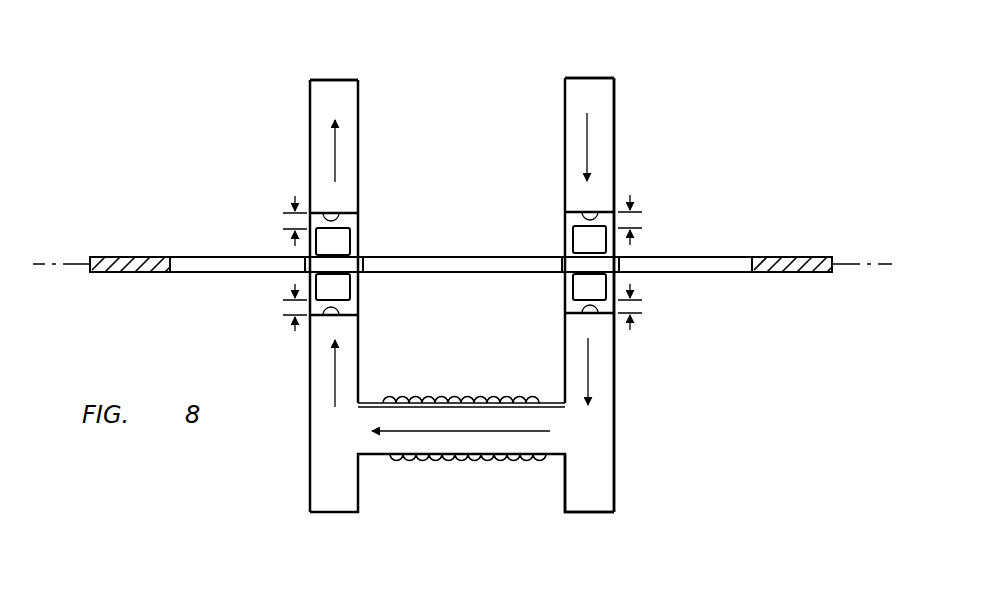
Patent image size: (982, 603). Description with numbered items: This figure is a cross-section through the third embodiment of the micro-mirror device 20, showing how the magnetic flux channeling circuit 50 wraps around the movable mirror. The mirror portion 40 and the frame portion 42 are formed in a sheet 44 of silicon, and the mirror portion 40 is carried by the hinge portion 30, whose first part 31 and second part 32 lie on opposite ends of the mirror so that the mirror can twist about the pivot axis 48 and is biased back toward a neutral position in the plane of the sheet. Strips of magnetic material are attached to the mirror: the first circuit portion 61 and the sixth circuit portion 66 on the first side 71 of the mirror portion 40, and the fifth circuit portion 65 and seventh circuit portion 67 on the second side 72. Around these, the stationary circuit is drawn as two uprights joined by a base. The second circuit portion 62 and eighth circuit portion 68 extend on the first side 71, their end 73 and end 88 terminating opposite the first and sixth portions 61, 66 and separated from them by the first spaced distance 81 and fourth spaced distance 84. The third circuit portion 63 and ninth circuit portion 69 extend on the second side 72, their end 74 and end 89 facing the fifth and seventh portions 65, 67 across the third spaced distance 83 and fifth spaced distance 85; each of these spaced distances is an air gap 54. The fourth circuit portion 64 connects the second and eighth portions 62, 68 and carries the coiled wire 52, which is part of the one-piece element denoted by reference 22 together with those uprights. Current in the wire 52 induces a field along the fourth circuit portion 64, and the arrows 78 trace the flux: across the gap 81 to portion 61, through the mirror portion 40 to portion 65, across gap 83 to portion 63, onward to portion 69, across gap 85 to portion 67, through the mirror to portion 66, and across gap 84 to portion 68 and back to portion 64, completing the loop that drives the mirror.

The device 20 is at (731, 90).
The stator 22 is at (600, 66).
The hinge portion 30 is at (189, 276).
The first part 31 is at (705, 258).
The second part 32 is at (220, 258).
The mirror portion 40 is at (433, 257).
The frame portion 42 is at (127, 258).
The sheet 44 is at (838, 277).
The pivot axis 48 is at (63, 262).
The magnetic flux channeling circuit 50 is at (617, 145).
The wire 52 is at (407, 465).
The air gap 54 is at (360, 215).
The first circuit portion 61 is at (572, 240).
The second circuit portion 62 is at (605, 95).
The third circuit portion 63 is at (616, 442).
The fourth circuit portion 64 is at (373, 402).
The fifth circuit portion 65 is at (572, 288).
The sixth circuit portion 66 is at (345, 243).
The seventh circuit portion 67 is at (345, 292).
The eighth circuit portion 68 is at (313, 97).
The ninth circuit portion 69 is at (312, 441).
The first side 71 is at (466, 257).
The second side 72 is at (453, 273).
The end 73 is at (578, 210).
The end 74 is at (575, 316).
The arrows 78 is at (336, 145).
The first spaced distance 81 is at (641, 213).
The third spaced distance 83 is at (642, 312).
The fourth spaced distance 84 is at (283, 213).
The fifth spaced distance 85 is at (283, 310).
The end 88 is at (345, 210).
The end 89 is at (352, 318).